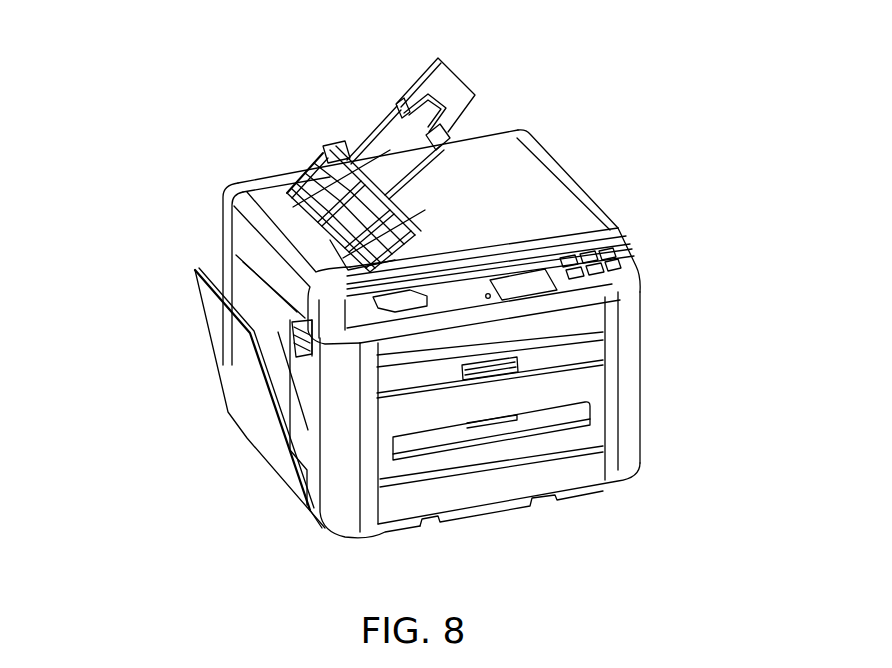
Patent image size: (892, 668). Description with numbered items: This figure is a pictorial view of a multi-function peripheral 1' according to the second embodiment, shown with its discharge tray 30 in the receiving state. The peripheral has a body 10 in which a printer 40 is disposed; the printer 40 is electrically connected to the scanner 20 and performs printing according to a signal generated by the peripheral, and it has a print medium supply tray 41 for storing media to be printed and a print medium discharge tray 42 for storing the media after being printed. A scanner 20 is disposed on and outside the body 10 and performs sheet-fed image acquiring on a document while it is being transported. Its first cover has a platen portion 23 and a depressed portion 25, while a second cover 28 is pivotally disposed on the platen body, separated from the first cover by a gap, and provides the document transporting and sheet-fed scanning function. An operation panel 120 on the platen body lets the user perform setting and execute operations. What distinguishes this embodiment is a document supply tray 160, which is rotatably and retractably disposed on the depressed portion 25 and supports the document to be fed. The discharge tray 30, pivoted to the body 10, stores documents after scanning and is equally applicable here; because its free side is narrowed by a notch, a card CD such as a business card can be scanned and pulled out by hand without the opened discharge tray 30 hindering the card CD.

The multi-function peripheral 1' is at (434, 293).
The body 10 is at (342, 512).
The scanner 20 is at (601, 211).
The platen portion 23 is at (518, 158).
The depressed portion 25 is at (280, 186).
The second cover 28 is at (226, 185).
The discharge tray 30 is at (228, 363).
The printer 40 is at (730, 368).
The print medium supply tray 41 is at (605, 476).
The print medium discharge tray 42 is at (583, 353).
The operation panel 120 is at (628, 279).
The document supply tray 160 is at (403, 98).
The card CD is at (400, 221).